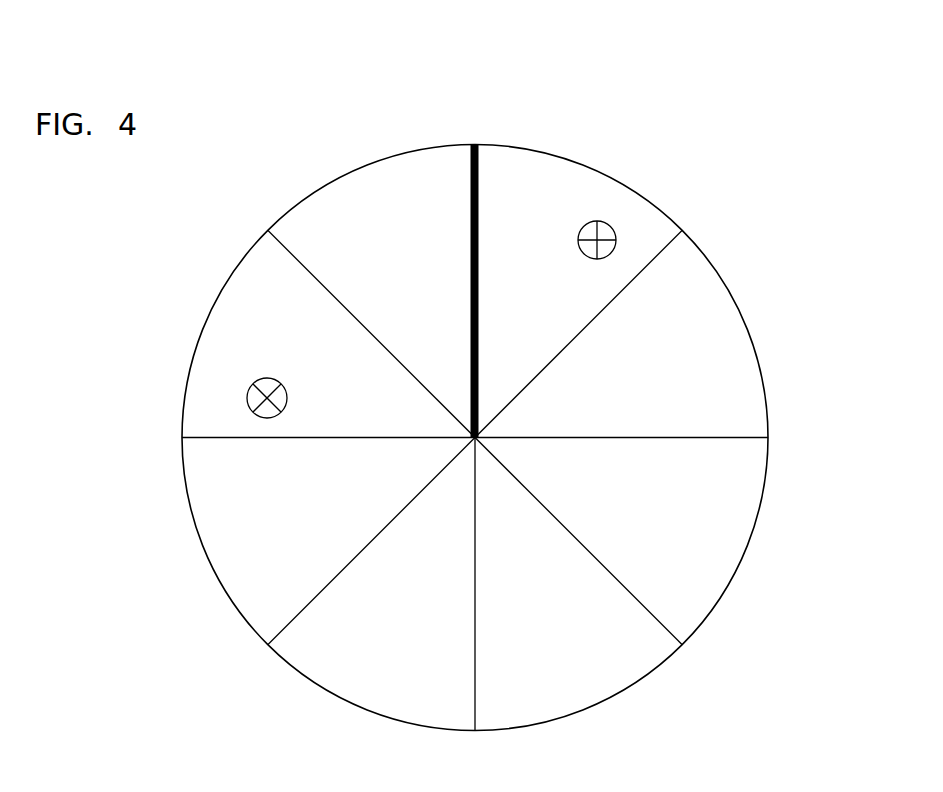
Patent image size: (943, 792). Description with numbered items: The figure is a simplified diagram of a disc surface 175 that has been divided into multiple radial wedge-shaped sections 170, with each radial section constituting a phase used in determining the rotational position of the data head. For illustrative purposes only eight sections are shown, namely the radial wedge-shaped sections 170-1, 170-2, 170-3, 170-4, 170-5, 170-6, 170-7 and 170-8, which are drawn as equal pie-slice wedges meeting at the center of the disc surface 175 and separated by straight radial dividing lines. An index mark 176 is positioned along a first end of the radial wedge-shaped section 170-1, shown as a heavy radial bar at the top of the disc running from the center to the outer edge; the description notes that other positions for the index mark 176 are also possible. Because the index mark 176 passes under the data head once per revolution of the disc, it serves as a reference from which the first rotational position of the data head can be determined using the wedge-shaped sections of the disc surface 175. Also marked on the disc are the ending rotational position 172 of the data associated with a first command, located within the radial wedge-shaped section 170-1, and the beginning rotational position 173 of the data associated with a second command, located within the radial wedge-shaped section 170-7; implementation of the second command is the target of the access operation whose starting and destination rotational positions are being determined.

The radial wedge-shaped sections 170 is at (781, 133).
The radial wedge-shaped section 170-1 is at (573, 187).
The radial wedge-shaped section 170-2 is at (750, 330).
The radial wedge-shaped section 170-3 is at (745, 553).
The radial wedge-shaped section 170-4 is at (612, 697).
The radial wedge-shaped section 170-5 is at (315, 685).
The radial wedge-shaped section 170-6 is at (217, 584).
The radial wedge-shaped section 170-7 is at (203, 322).
The radial wedge-shaped section 170-8 is at (362, 165).
The ending rotational position 172 is at (613, 225).
The beginning rotational position 173 is at (248, 392).
The disc surface 175 is at (338, 235).
The index mark 176 is at (477, 160).